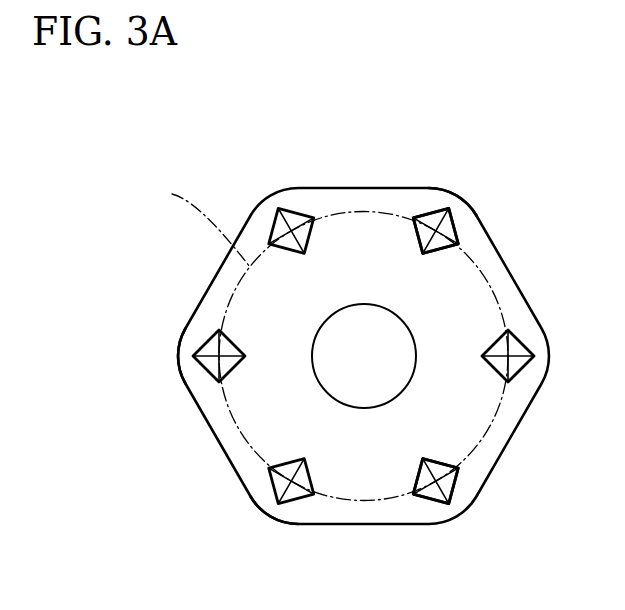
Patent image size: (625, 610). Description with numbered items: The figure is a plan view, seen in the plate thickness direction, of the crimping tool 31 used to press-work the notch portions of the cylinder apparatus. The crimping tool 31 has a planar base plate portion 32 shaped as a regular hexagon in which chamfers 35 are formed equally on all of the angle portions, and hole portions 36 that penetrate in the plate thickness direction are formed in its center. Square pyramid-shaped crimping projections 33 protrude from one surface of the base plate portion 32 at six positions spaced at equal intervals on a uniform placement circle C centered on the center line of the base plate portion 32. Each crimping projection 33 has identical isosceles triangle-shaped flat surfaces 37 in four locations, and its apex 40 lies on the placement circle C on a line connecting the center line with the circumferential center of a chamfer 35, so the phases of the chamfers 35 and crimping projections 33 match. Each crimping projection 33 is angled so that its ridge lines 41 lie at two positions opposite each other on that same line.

The crimping tool 31 is at (520, 191).
The base plate portion 32 is at (504, 279).
The crimping projections 33 is at (295, 222).
The chamfers 35 is at (457, 197).
The hole portions 36 is at (392, 398).
The flat surfaces 37 is at (515, 349).
The apexes 40 is at (436, 231).
The ridge lines 41 is at (418, 243).